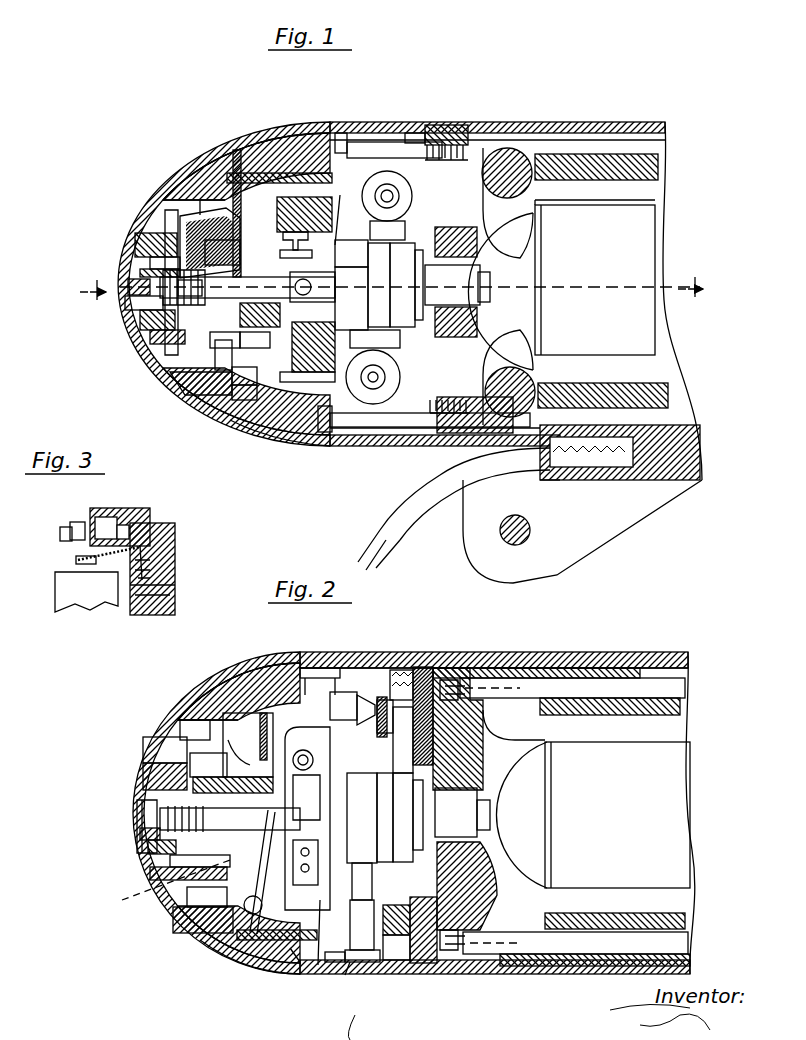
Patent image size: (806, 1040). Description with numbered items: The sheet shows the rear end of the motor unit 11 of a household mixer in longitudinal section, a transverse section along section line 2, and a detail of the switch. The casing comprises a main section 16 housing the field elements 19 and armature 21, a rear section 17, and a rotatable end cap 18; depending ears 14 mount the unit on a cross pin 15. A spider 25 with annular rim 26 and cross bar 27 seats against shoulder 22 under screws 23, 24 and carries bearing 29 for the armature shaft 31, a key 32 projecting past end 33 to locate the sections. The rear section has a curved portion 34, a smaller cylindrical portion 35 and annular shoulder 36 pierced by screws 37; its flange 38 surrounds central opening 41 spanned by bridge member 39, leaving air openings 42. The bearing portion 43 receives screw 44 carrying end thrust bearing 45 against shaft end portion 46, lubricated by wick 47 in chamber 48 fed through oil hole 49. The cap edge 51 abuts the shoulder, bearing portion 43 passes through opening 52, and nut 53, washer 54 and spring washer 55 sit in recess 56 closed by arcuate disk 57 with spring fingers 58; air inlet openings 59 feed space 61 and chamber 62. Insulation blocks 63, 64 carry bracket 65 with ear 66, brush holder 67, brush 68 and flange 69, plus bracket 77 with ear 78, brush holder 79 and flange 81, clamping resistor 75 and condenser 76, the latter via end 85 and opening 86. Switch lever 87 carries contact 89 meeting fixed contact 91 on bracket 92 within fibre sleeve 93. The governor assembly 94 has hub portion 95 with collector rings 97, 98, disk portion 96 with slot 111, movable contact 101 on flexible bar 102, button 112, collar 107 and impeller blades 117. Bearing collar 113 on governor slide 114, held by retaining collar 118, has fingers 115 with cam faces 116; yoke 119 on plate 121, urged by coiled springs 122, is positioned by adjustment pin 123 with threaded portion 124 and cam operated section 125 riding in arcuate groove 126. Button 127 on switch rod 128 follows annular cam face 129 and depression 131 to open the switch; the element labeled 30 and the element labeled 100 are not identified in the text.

In FIG. 1, the motor unit 11 is at (524, 116).
In FIG. 2, the motor unit 11 is at (660, 660).
In FIG. 1, the depending ears 14 is at (548, 572).
In FIG. 1, the cross pin 15 is at (531, 535).
In FIG. 1, the main section 16 is at (572, 121).
In FIG. 2, the main section 16 is at (655, 656).
In FIG. 1, the rear section 17 is at (376, 122).
In FIG. 2, the rear section 17 is at (360, 652).
In FIG. 1, the end section 18 is at (198, 166).
In FIG. 1, the field elements 19 is at (600, 158).
In FIG. 2, the field elements 19 is at (683, 703).
In FIG. 1, the armature 21 is at (595, 277).
In FIG. 2, the armature 21 is at (593, 815).
In FIG. 2, the shoulder 22 is at (510, 668).
In FIG. 2, the screws 23 is at (570, 685).
In FIG. 2, the screws 24 is at (534, 955).
In FIG. 1, the spider 25 is at (457, 346).
In FIG. 2, the spider 25 is at (500, 960).
In FIG. 1, the annular rim 26 is at (490, 134).
In FIG. 2, the cross bar 27 is at (480, 880).
In FIG. 1, the bearing 29 is at (455, 229).
In FIG. 2, the bearing 29 is at (462, 812).
In FIG. 2, the screw 30 is at (313, 972).
In FIG. 1, the armature shaft 31 is at (490, 287).
In FIG. 1, the key 32 is at (456, 133).
In FIG. 1, the end of the main section 33 is at (440, 127).
In FIG. 1, the portion 34 is at (340, 121).
In FIG. 2, the portion 34 is at (365, 960).
In FIG. 1, the cylindrical portion 35 is at (283, 135).
In FIG. 1, the annular shoulder 36 is at (300, 140).
In FIG. 1, the screws 37 is at (333, 150).
In FIG. 1, the flange 38 is at (263, 440).
In FIG. 2, the flange 38 is at (240, 675).
In FIG. 1, the bridge member 39 is at (225, 353).
In FIG. 1, the central opening 41 is at (244, 389).
In FIG. 2, the openings 42 is at (248, 745).
In FIG. 1, the bearing portion 43 is at (180, 349).
In FIG. 1, the screw 44 is at (175, 318).
In FIG. 2, the screw 44 is at (160, 818).
In FIG. 1, the end thrust bearing 45 is at (247, 287).
In FIG. 1, the end portion 46 is at (222, 252).
In FIG. 1, the wick 47 is at (184, 236).
In FIG. 1, the chamber 48 is at (187, 186).
In FIG. 1, the oil hole 49 is at (238, 165).
In FIG. 1, the forward annular edge 51 is at (292, 446).
In FIG. 2, the forward annular edge 51 is at (290, 970).
In FIG. 1, the central opening 52 is at (160, 243).
In FIG. 1, the nut 53 is at (170, 330).
In FIG. 2, the nut 53 is at (148, 847).
In FIG. 1, the washer 54 is at (180, 337).
In FIG. 1, the spring washer 55 is at (158, 258).
In FIG. 1, the recess 56 is at (138, 284).
In FIG. 1, the arcuate disk 57 is at (152, 303).
In FIG. 2, the arcuate disk 57 is at (137, 805).
In FIG. 1, the spring fingers 58 is at (150, 270).
In FIG. 2, the spring fingers 58 is at (140, 836).
In FIG. 1, the air inlet openings 59 is at (212, 350).
In FIG. 2, the air inlet openings 59 is at (150, 745).
In FIG. 2, the space 61 is at (190, 722).
In FIG. 2, the chamber 62 is at (338, 692).
In FIG. 2, the block 63 is at (425, 963).
In FIG. 3, the block 64 is at (176, 535).
In FIG. 2, the block 64 is at (440, 668).
In FIG. 2, the bracket 65 is at (390, 962).
In FIG. 2, the ear 66 is at (355, 965).
In FIG. 2, the brush holder 67 is at (375, 905).
In FIG. 2, the brush 68 is at (360, 873).
In FIG. 2, the flange 69 is at (362, 930).
In FIG. 1, the resistor 75 is at (396, 190).
In FIG. 1, the condenser 76 is at (392, 380).
In FIG. 3, the condenser 76 is at (68, 605).
In FIG. 2, the bracket 77 is at (380, 697).
In FIG. 2, the ear 78 is at (395, 670).
In FIG. 2, the brush holder 79 is at (393, 750).
In FIG. 2, the flange 81 is at (490, 740).
In FIG. 3, the end 85 is at (108, 600).
In FIG. 3, the opening 86 is at (76, 560).
In FIG. 3, the switch lever 87 is at (60, 537).
In FIG. 2, the switch lever 87 is at (363, 695).
In FIG. 3, the contact 89 is at (73, 522).
In FIG. 2, the contact 89 is at (380, 733).
In FIG. 3, the fixed contact 91 is at (120, 524).
In FIG. 3, the bracket 92 is at (152, 528).
In FIG. 3, the sleeve 93 is at (98, 520).
In FIG. 2, the governor assembly 94 is at (320, 945).
In FIG. 1, the hub portion 95 is at (379, 285).
In FIG. 2, the hub portion 95 is at (388, 862).
In FIG. 1, the disk portion 96 is at (306, 381).
In FIG. 2, the disk portion 96 is at (318, 912).
In FIG. 1, the collector ring 97 is at (351, 298).
In FIG. 2, the collector ring 97 is at (362, 818).
In FIG. 1, the collector ring 98 is at (406, 285).
In FIG. 2, the collector ring 98 is at (408, 817).
In FIG. 1, the shaft 100 is at (314, 287).
In FIG. 2, the movable contact 101 is at (303, 760).
In FIG. 1, the flexible bar 102 is at (306, 200).
In FIG. 2, the flexible bar 102 is at (304, 858).
In FIG. 1, the collar 107 is at (375, 339).
In FIG. 1, the slot 111 is at (302, 354).
In FIG. 1, the button 112 is at (337, 240).
In FIG. 1, the bearing collar 113 is at (257, 340).
In FIG. 2, the bearing collar 113 is at (231, 770).
In FIG. 1, the governor slide 114 is at (282, 240).
In FIG. 1, the fingers 115 is at (246, 372).
In FIG. 1, the cam faces 116 is at (351, 257).
In FIG. 1, the impeller blades 117 is at (231, 340).
In FIG. 1, the retaining collar 118 is at (246, 315).
In FIG. 2, the yoke 119 is at (207, 897).
In FIG. 2, the plate 121 is at (268, 925).
In FIG. 2, the coiled springs 122 is at (180, 915).
In FIG. 2, the adjustment pin 123 is at (175, 868).
In FIG. 2, the threaded portion 124 is at (162, 884).
In FIG. 2, the cam operated section 125 is at (150, 872).
In FIG. 2, the arcuate groove 126 is at (143, 775).
In FIG. 2, the button 127 is at (320, 668).
In FIG. 2, the switch rod 128 is at (270, 685).
In FIG. 2, the annular cam face 129 is at (210, 930).
In FIG. 2, the depression 131 is at (210, 705).
In FIG. 1, the section line 2 is at (394, 283).